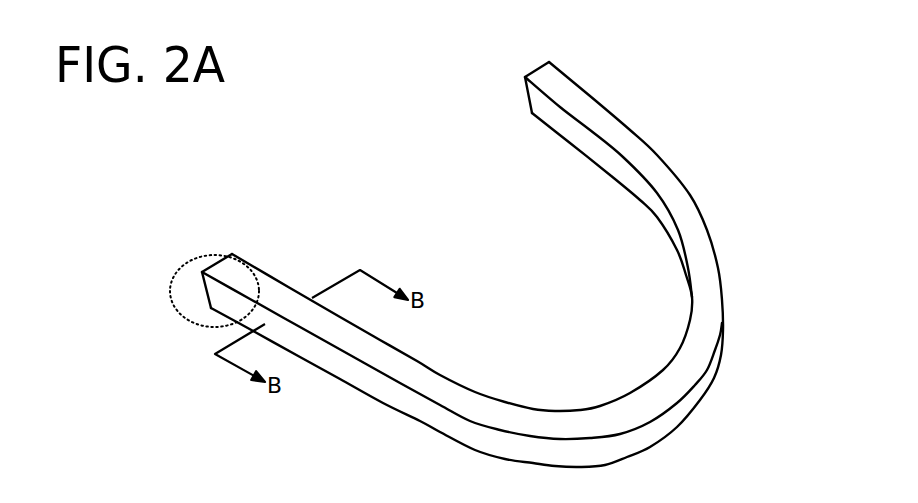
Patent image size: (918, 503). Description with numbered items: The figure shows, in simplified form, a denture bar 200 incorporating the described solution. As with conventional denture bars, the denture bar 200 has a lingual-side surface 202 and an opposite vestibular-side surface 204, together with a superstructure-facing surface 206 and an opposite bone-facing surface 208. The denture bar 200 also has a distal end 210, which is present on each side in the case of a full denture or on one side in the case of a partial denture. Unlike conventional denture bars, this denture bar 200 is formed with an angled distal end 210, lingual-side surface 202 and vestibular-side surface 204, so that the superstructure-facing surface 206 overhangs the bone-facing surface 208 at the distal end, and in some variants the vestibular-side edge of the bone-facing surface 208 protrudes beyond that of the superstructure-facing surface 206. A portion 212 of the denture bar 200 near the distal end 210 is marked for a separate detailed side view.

The denture bar 200 is at (446, 279).
The lingual-side surface 202 is at (558, 120).
The vestibular-side surface 204 is at (345, 370).
The superstructure-facing surface 206 is at (272, 290).
The bone-facing surface 208 is at (383, 403).
The distal end 210 is at (528, 97).
The portion of the denture bar 212 is at (172, 270).